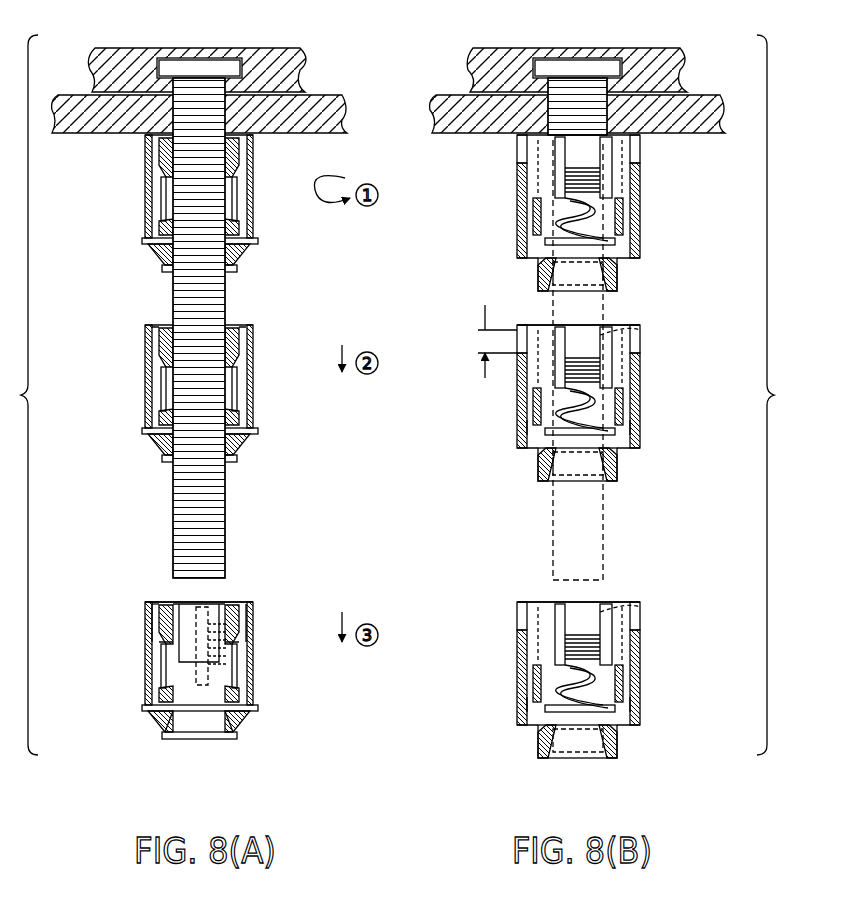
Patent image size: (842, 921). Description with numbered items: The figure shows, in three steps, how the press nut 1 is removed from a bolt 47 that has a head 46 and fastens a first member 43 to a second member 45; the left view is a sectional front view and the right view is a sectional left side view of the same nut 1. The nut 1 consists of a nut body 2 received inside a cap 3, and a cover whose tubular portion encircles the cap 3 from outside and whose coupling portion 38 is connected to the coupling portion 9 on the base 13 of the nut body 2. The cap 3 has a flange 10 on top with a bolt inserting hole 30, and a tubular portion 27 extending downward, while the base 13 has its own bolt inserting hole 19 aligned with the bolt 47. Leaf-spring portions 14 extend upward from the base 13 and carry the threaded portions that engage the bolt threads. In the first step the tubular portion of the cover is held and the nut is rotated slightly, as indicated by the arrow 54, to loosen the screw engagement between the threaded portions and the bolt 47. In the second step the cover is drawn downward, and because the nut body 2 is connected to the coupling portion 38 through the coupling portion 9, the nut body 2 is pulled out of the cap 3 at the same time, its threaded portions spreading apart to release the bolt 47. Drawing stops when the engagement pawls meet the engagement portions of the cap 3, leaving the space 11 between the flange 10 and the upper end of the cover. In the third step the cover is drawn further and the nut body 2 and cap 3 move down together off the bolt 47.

In FIG. 8A, the press nut 1 is at (193, 676).
In FIG. 8B, the press nut 1 is at (579, 667).
In FIG. 8A, the nut body 2 is at (158, 671).
In FIG. 8A, the cap 3 is at (168, 640).
In FIG. 8B, the cap 3 is at (560, 611).
In FIG. 8A, the coupling portion 9 is at (205, 770).
In FIG. 8A, the flange 10 is at (237, 587).
In FIG. 8B, the space 11 is at (478, 334).
In FIG. 8A, the base 13 is at (221, 715).
In FIG. 8B, the base 13 is at (620, 745).
In FIG. 8B, the spring portions 14 is at (628, 719).
In FIG. 8B, the bolt inserting hole 19 is at (573, 761).
In FIG. 8A, the tubular portion 27 is at (226, 620).
In FIG. 8B, the tubular portion 27 is at (621, 634).
In FIG. 8A, the bolt inserting hole 30 is at (238, 604).
In FIG. 8B, the bolt inserting hole 30 is at (600, 607).
In FIG. 8A, the coupling portion 38 is at (237, 743).
In FIG. 8A, the first member 43 is at (287, 62).
In FIG. 8B, the first member 43 is at (665, 60).
In FIG. 8A, the second member 45 is at (317, 108).
In FIG. 8B, the second member 45 is at (705, 103).
In FIG. 8A, the head 46 is at (205, 62).
In FIG. 8B, the head 46 is at (590, 62).
In FIG. 8A, the bolt 47 is at (215, 285).
In FIG. 8A, the arrow 54 is at (335, 178).